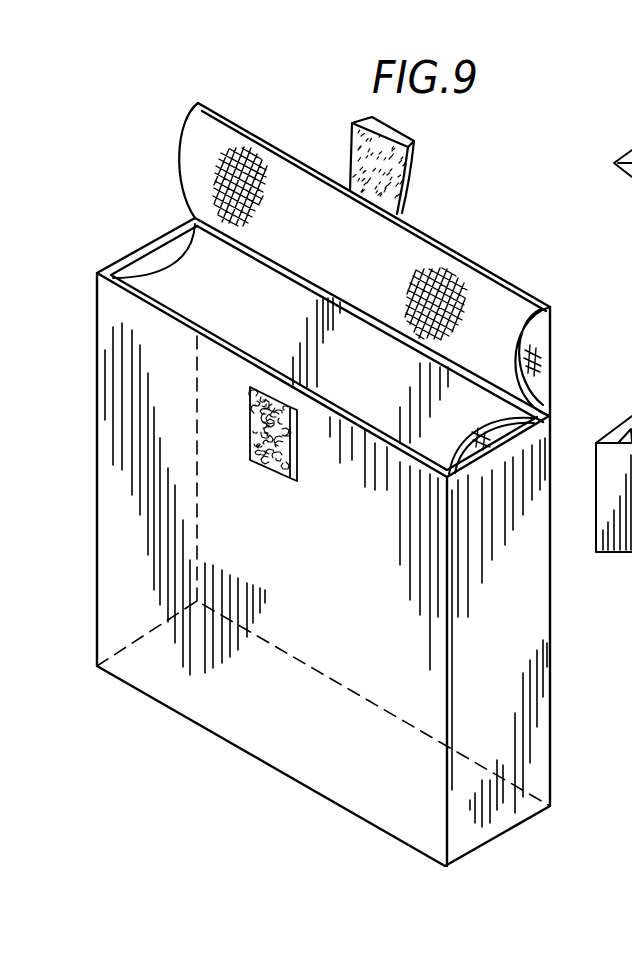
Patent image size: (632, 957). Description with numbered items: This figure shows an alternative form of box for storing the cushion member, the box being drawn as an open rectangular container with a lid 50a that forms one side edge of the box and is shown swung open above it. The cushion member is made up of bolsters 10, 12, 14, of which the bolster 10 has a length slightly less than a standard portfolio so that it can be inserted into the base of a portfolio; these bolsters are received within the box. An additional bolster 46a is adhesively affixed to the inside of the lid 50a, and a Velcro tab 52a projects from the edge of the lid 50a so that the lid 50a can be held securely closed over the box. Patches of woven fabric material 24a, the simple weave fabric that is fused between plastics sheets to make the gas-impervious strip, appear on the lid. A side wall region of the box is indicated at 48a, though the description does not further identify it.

The bolster 10 is at (277, 732).
The bolster 12 is at (165, 253).
The bolster 14 is at (497, 438).
The woven fabric material 24a is at (183, 253).
The additional bolster 46a is at (528, 352).
The side wall of box 48a is at (493, 817).
The lid 50a is at (443, 242).
The Velcro tab 52a is at (403, 128).